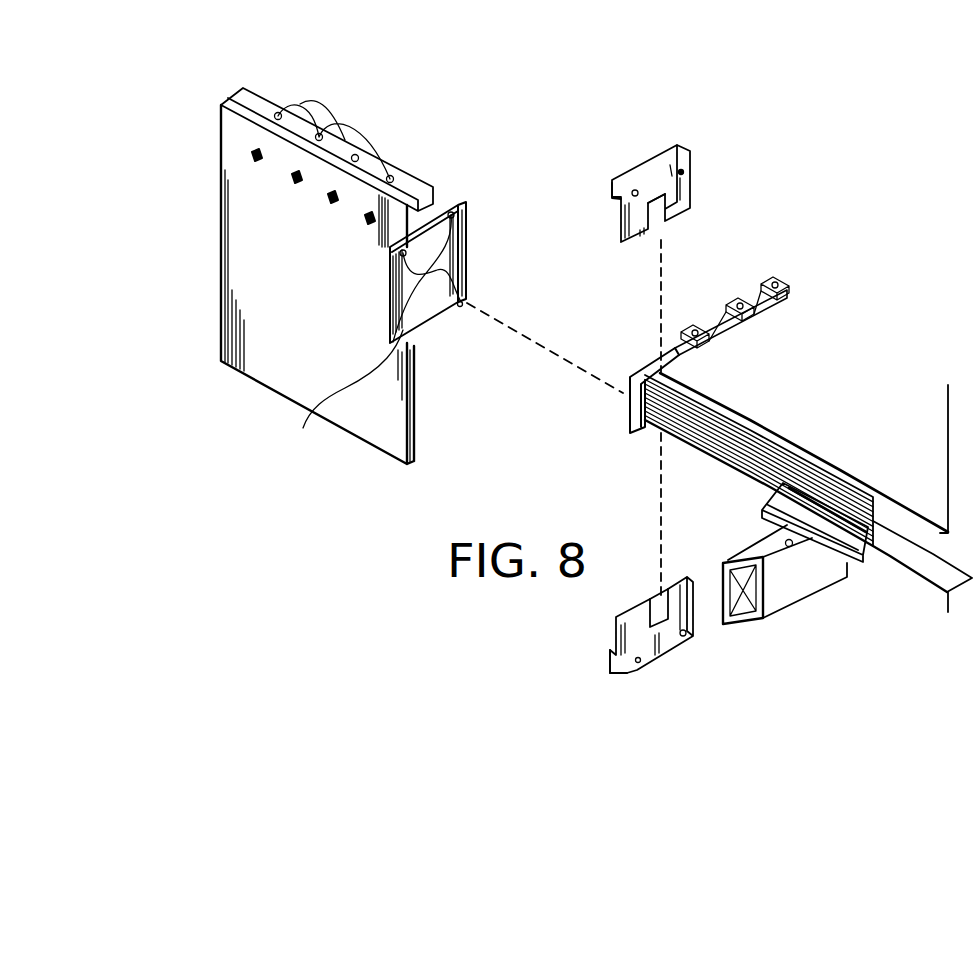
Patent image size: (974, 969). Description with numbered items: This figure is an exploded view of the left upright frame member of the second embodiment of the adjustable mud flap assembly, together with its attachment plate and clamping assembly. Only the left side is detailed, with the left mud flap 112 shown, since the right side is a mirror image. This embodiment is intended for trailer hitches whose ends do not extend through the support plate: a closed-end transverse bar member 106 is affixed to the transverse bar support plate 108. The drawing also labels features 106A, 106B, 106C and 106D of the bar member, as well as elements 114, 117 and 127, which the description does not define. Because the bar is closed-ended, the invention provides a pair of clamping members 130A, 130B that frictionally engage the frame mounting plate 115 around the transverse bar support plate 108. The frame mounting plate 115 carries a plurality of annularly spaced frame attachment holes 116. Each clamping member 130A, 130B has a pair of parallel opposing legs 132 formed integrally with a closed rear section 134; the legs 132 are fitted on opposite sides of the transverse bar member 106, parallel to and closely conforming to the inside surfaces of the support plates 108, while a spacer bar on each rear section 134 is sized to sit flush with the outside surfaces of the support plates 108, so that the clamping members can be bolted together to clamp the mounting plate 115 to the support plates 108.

The closed-end transverse bar member 106 is at (895, 510).
The receiver tube 106A is at (745, 470).
The rail strip 106B is at (820, 448).
The rail beam 106C is at (728, 416).
The rail end bracket 106D is at (703, 453).
The transverse bar support plate 108 is at (718, 324).
The left mud flap 112 is at (245, 312).
The connector plate 114 is at (440, 197).
The frame mounting plate 115 is at (426, 314).
The frame attachment holes 116 is at (340, 398).
The top strip 117 is at (240, 91).
The jumper wires 127 is at (340, 136).
The clamping member 130A is at (692, 181).
The clamping member 130B is at (665, 648).
The parallel opposing legs 132 is at (668, 212).
The closed rear section 134 is at (657, 182).